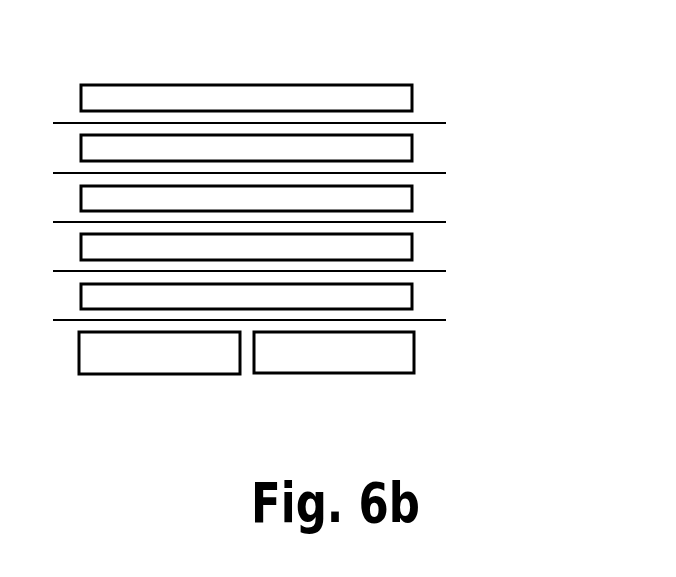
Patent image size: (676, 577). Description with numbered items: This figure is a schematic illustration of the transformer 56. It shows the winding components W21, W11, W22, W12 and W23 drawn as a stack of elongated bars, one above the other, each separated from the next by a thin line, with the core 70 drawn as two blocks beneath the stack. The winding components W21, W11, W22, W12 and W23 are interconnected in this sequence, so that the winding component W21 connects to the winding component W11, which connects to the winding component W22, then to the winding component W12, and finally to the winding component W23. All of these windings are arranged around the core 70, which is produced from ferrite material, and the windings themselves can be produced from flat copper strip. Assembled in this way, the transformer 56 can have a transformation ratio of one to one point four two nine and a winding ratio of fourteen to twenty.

The winding component W23 is at (404, 100).
The winding component W12 is at (404, 148).
The winding component W22 is at (403, 198).
The winding component W11 is at (403, 247).
The winding component W21 is at (403, 293).
The transformer 56 is at (180, 386).
The core 70 is at (379, 352).